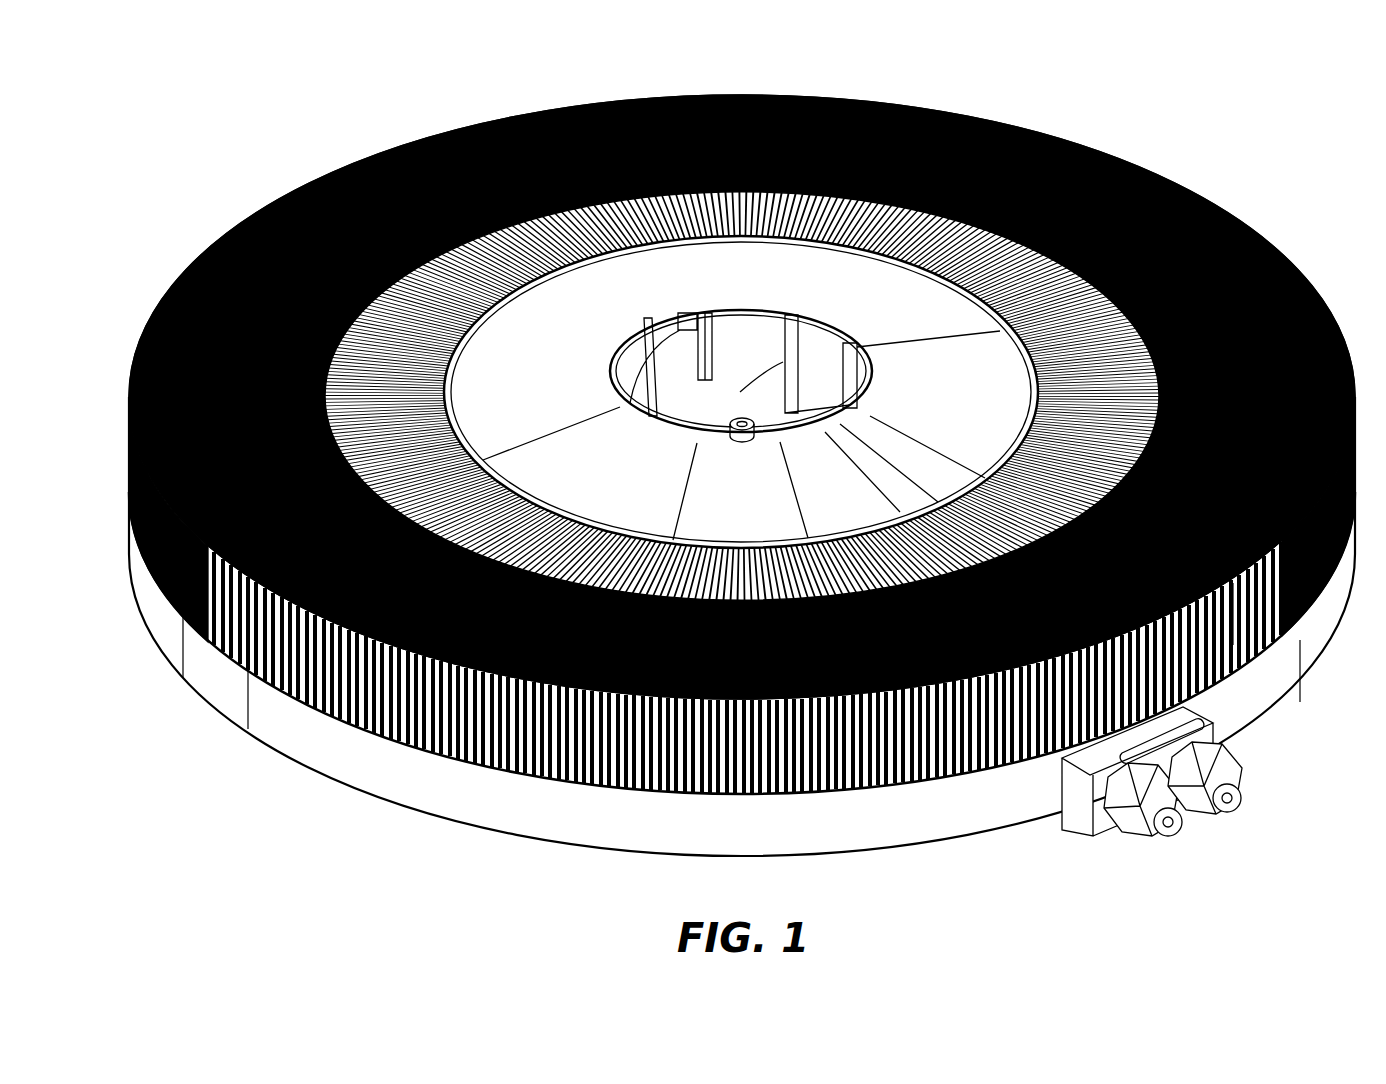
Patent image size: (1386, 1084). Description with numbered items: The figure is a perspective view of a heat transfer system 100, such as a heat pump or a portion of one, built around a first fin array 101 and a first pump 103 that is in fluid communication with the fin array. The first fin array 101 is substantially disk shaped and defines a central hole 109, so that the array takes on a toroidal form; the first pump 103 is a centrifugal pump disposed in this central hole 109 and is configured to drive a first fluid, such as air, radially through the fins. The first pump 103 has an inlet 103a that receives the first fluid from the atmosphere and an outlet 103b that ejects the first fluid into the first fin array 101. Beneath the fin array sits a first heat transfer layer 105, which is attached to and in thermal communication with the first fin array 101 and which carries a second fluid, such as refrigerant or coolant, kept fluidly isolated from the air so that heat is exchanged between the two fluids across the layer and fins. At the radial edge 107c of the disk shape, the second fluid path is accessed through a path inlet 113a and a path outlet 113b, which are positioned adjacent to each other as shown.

The heat transfer system 100 is at (242, 134).
The first fin array 101 is at (1287, 263).
The first pump 103 is at (652, 488).
The inlet 103a is at (612, 392).
The outlet 103b is at (762, 330).
The first heat transfer layer 105 is at (200, 672).
The radial edge 107c is at (917, 815).
The central hole 109 is at (1022, 432).
The path inlet 113a is at (1236, 772).
The path outlet 113b is at (1136, 832).